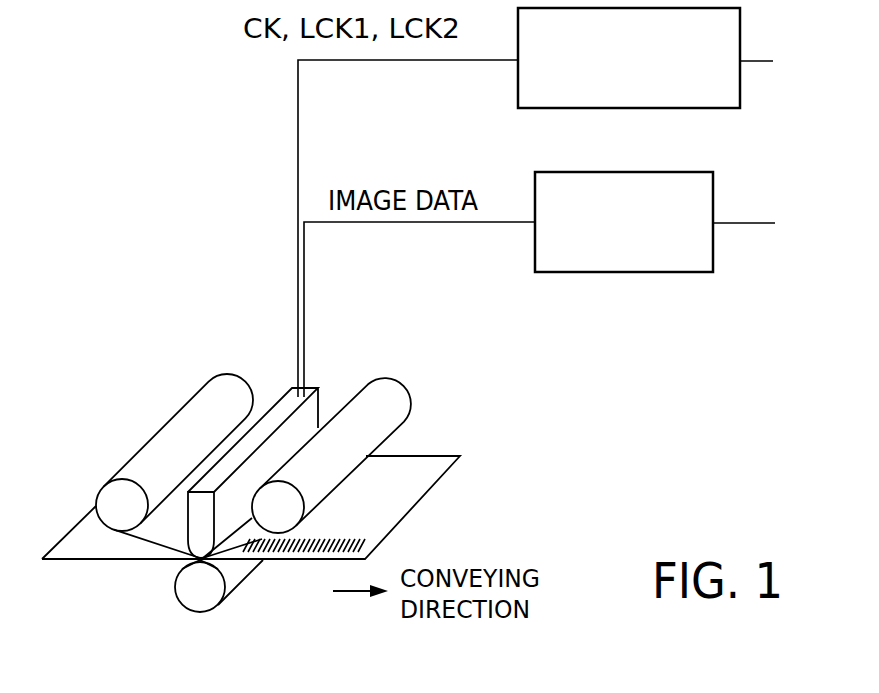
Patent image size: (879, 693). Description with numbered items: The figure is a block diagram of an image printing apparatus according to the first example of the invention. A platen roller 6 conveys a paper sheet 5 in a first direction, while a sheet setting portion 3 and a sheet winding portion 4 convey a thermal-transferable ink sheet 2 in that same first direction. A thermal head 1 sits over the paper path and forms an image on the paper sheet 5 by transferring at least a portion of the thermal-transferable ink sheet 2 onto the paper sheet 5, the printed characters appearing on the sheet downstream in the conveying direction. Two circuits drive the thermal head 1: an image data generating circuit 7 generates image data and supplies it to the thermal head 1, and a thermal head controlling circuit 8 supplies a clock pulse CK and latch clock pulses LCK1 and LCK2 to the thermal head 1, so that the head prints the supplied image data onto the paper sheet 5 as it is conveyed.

The thermal head 1 is at (318, 386).
The thermal-transferable ink sheet 2 is at (155, 547).
The sheet setting portion 3 is at (249, 378).
The sheet winding portion 4 is at (404, 381).
The paper sheet 5 is at (443, 456).
The platen roller 6 is at (222, 606).
The image data generating circuit 7 is at (713, 194).
The thermal head controlling circuit 8 is at (740, 33).